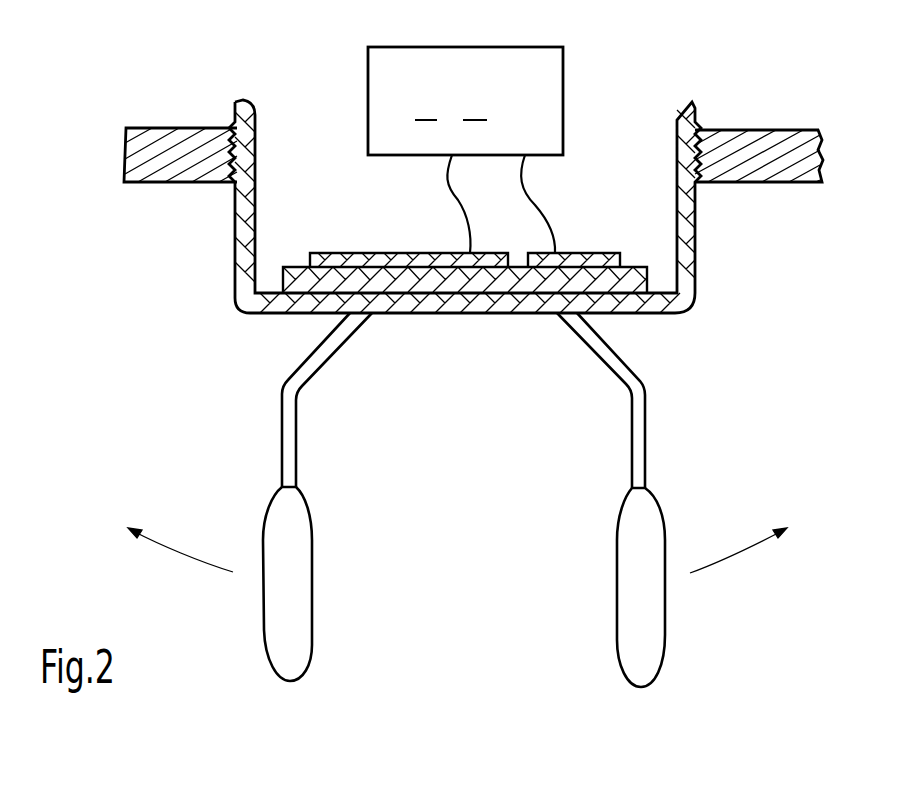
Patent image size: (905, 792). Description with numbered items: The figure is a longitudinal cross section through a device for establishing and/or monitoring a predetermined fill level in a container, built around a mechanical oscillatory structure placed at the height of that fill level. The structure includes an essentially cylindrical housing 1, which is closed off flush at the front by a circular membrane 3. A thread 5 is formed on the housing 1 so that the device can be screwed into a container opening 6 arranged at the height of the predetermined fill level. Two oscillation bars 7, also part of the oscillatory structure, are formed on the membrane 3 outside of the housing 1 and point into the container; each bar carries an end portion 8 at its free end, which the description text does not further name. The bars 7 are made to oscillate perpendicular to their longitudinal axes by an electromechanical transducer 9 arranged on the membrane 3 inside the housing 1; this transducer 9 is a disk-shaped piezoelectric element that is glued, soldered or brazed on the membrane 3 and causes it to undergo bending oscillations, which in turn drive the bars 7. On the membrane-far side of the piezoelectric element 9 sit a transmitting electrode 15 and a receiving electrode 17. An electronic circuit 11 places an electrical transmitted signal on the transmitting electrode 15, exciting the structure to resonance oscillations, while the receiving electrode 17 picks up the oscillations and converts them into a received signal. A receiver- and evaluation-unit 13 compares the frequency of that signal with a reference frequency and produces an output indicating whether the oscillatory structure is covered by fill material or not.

The housing 1 is at (236, 244).
The membrane 3 is at (437, 314).
The thread 5 is at (699, 150).
The container opening 6 is at (237, 133).
The oscillation bars 7 is at (265, 469).
The contact pads 8 is at (276, 620).
The electromechanical transducer 9 is at (640, 283).
The electronic circuit 11 is at (465, 150).
The receiver- and evaluation-unit 13 is at (465, 101).
The transmitting electrode 15 is at (348, 252).
The receiving electrode 17 is at (592, 252).